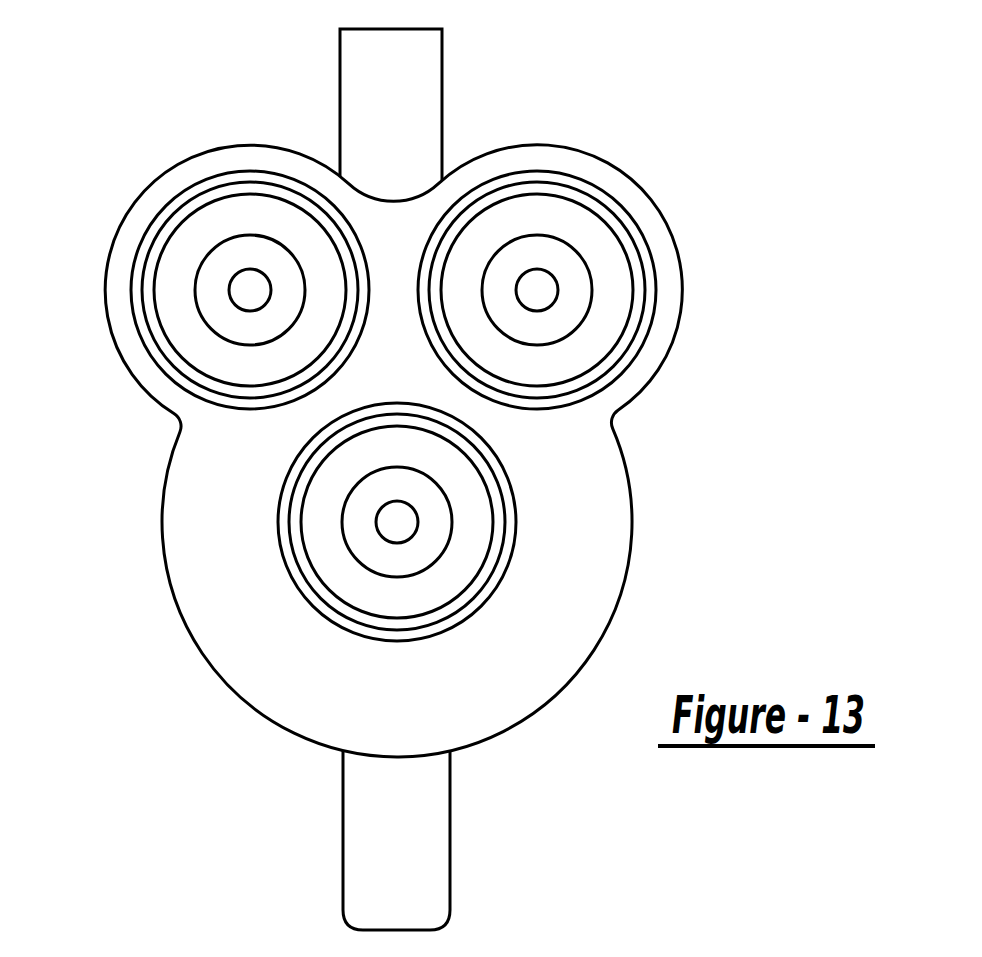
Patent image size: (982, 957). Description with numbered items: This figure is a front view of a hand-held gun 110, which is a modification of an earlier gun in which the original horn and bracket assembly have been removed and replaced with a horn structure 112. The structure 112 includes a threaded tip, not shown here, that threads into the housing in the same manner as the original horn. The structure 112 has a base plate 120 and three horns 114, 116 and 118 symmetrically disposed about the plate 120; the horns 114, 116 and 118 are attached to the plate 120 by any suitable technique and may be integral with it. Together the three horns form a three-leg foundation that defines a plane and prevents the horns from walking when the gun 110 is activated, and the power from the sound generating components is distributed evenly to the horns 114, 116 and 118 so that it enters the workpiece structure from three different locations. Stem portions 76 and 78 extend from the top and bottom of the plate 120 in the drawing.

The hand-held gun 110 is at (453, 465).
The horn structure 112 is at (632, 581).
The horn 114 is at (227, 260).
The horn 116 is at (390, 557).
The horn 118 is at (570, 308).
The base plate 120 is at (198, 548).
The lower mounting stem 76 is at (397, 875).
The upper mounting stem 78 is at (413, 29).